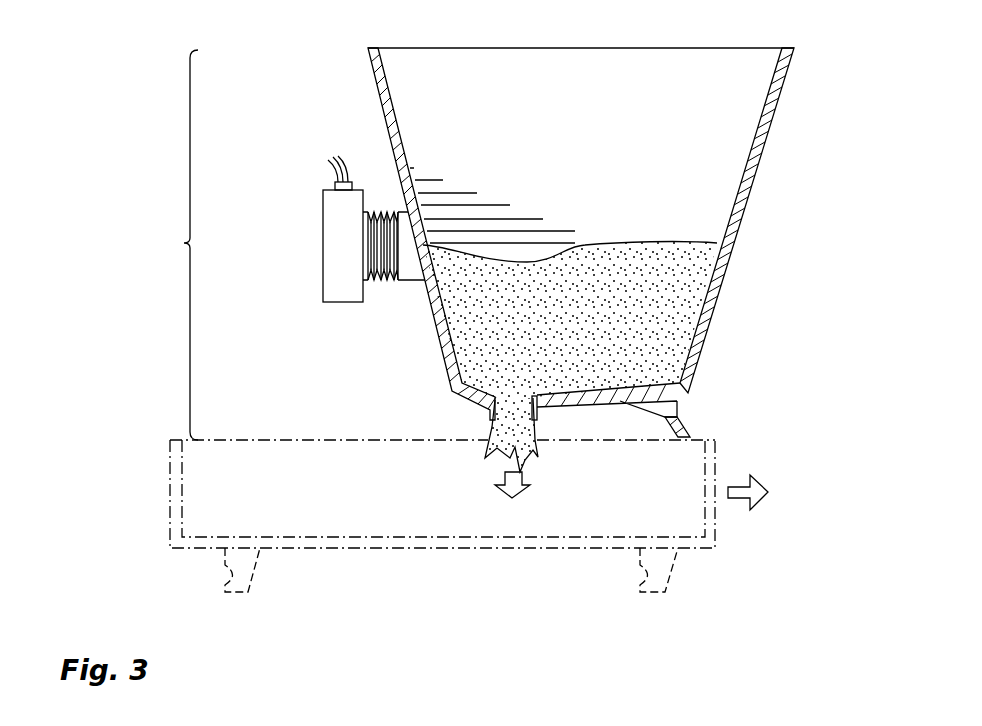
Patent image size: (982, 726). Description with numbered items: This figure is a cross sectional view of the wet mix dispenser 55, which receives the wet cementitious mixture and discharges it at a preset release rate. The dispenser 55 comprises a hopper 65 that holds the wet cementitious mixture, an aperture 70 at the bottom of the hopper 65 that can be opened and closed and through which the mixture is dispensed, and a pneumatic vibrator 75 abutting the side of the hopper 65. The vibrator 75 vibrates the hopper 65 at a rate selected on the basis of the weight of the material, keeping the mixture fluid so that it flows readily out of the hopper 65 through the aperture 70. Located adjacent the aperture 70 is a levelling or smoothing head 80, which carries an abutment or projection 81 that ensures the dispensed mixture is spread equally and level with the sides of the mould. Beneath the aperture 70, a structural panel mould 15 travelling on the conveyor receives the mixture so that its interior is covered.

The wet mix dispenser 55 is at (174, 245).
The hopper 65 is at (738, 228).
The pneumatic vibrator 75 is at (333, 215).
The smoothing head 80 is at (677, 406).
The projection 81 is at (686, 428).
The aperture 70 is at (507, 417).
The structural panel mould 15 is at (712, 543).